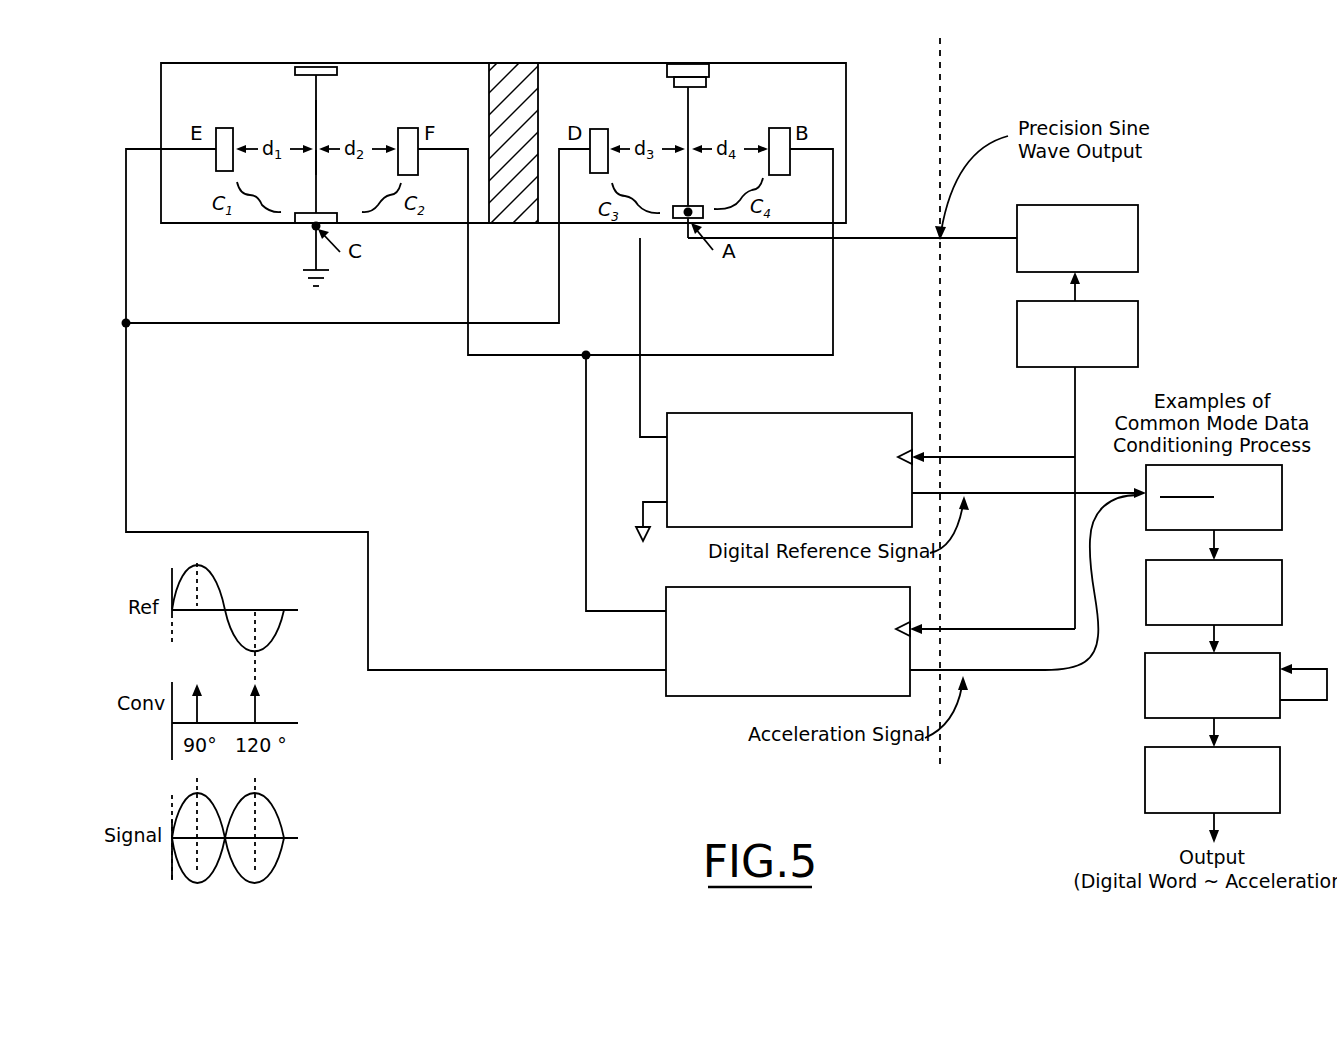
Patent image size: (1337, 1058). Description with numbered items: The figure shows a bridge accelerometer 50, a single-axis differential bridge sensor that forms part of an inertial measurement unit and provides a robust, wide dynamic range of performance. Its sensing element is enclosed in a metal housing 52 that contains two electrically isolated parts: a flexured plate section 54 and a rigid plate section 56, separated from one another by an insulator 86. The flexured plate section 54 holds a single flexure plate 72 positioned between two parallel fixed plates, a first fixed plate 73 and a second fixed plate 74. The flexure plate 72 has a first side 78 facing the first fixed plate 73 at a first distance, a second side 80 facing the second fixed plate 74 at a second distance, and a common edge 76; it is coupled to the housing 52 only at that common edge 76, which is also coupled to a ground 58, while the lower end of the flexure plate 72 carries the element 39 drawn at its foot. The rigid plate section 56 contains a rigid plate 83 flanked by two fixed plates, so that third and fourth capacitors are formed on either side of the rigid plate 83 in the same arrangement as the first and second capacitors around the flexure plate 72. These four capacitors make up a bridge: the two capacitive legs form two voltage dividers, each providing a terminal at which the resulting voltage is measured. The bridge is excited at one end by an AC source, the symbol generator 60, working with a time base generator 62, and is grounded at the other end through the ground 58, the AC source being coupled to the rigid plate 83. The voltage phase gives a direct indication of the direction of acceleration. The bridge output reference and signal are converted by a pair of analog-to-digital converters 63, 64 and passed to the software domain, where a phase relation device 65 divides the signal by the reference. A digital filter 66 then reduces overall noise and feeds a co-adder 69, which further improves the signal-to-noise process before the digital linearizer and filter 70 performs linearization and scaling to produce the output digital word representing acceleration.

The lower plate of pendulum 39 is at (322, 213).
The bridge accelerometer 50 is at (1048, 64).
The housing 52 is at (435, 63).
The flexured plate section 54 is at (208, 63).
The rigid plate section 56 is at (638, 63).
The ground 58 is at (309, 272).
The symbol generator 60 is at (1122, 205).
The time base generator 62 is at (1138, 310).
The analog-to-digital converter 63 is at (668, 584).
The analog-to-digital converter 64 is at (835, 413).
The phase relation device 65 is at (1282, 497).
The digital filter 66 is at (1282, 583).
The co-adder 69 is at (1270, 653).
The digital linearizer and filter 70 is at (1280, 757).
The flexure plate 72 is at (314, 182).
The first fixed plate 73 is at (228, 128).
The second fixed plate 74 is at (410, 128).
The common edge 76 is at (315, 67).
The first side 78 is at (313, 117).
The second side 80 is at (318, 99).
The rigid plate 83 is at (692, 100).
The insulator 86 is at (527, 63).